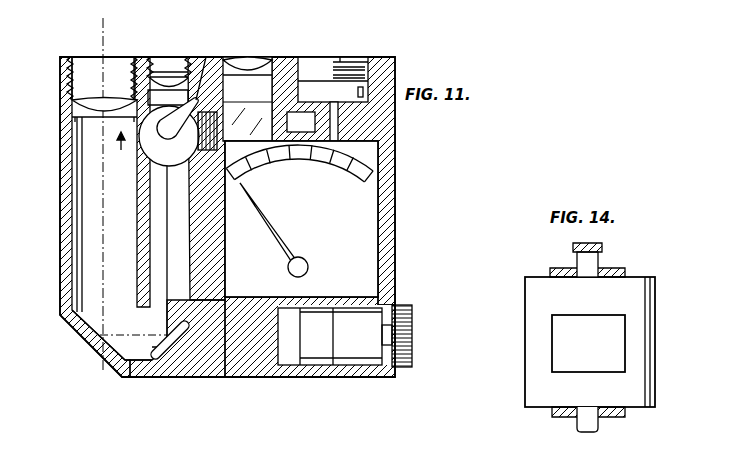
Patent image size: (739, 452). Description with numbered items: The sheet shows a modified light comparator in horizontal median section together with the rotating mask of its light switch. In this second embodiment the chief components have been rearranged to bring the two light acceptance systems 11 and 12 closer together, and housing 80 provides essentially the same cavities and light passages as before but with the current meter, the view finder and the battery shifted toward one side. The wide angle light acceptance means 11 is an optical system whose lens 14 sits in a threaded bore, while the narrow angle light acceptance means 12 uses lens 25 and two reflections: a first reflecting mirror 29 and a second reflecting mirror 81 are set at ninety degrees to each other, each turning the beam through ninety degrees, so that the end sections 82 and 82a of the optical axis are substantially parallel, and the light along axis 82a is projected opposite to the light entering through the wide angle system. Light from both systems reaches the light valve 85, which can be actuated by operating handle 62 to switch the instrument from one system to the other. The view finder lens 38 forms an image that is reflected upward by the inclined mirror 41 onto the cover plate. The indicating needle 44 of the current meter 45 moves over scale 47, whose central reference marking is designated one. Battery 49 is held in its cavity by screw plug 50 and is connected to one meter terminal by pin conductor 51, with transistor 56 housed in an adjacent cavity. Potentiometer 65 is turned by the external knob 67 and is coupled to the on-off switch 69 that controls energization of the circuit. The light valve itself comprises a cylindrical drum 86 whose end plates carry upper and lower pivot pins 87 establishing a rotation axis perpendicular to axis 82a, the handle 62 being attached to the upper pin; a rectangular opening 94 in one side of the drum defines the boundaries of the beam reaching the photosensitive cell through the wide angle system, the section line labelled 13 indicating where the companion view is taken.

In FIG. 11, the first light acceptance means 11 is at (183, 46).
In FIG. 11, the second light acceptance means 12 is at (124, 52).
In FIG. 11, the section line 13- 13 is at (172, 146).
In FIG. 11, the lens 14 is at (163, 80).
In FIG. 11, the lens 25 is at (100, 118).
In FIG. 11, the mirror 29 is at (80, 311).
In FIG. 11, the lens 38 is at (250, 60).
In FIG. 11, the mirror 41 is at (255, 118).
In FIG. 11, the indicating needle 44 is at (282, 243).
In FIG. 11, the meter 45 is at (364, 223).
In FIG. 11, the scale 47 is at (310, 160).
In FIG. 11, the battery 49 is at (310, 90).
In FIG. 11, the screw plug 50 is at (357, 60).
In FIG. 11, the pin conductor 51 is at (338, 110).
In FIG. 11, the transistor 56 is at (310, 125).
In FIG. 11, the operating handle 62 is at (206, 57).
In FIG. 14, the operating handle 62 is at (602, 248).
In FIG. 11, the potentiometer 65 is at (362, 353).
In FIG. 11, the knob 67 is at (400, 325).
In FIG. 11, the switch 69 is at (318, 353).
In FIG. 11, the housing 80 is at (259, 385).
In FIG. 11, the second reflecting mirror 81 is at (168, 350).
In FIG. 11, the end section of optical axis 82 is at (103, 232).
In FIG. 11, the end section of optical axis 82a is at (168, 240).
In FIG. 11, the light valve 85 is at (157, 174).
In FIG. 14, the cylindrical drum 86 is at (642, 305).
In FIG. 14, the pivot pins 87 is at (600, 425).
In FIG. 14, the rectangular opening 94 is at (558, 352).